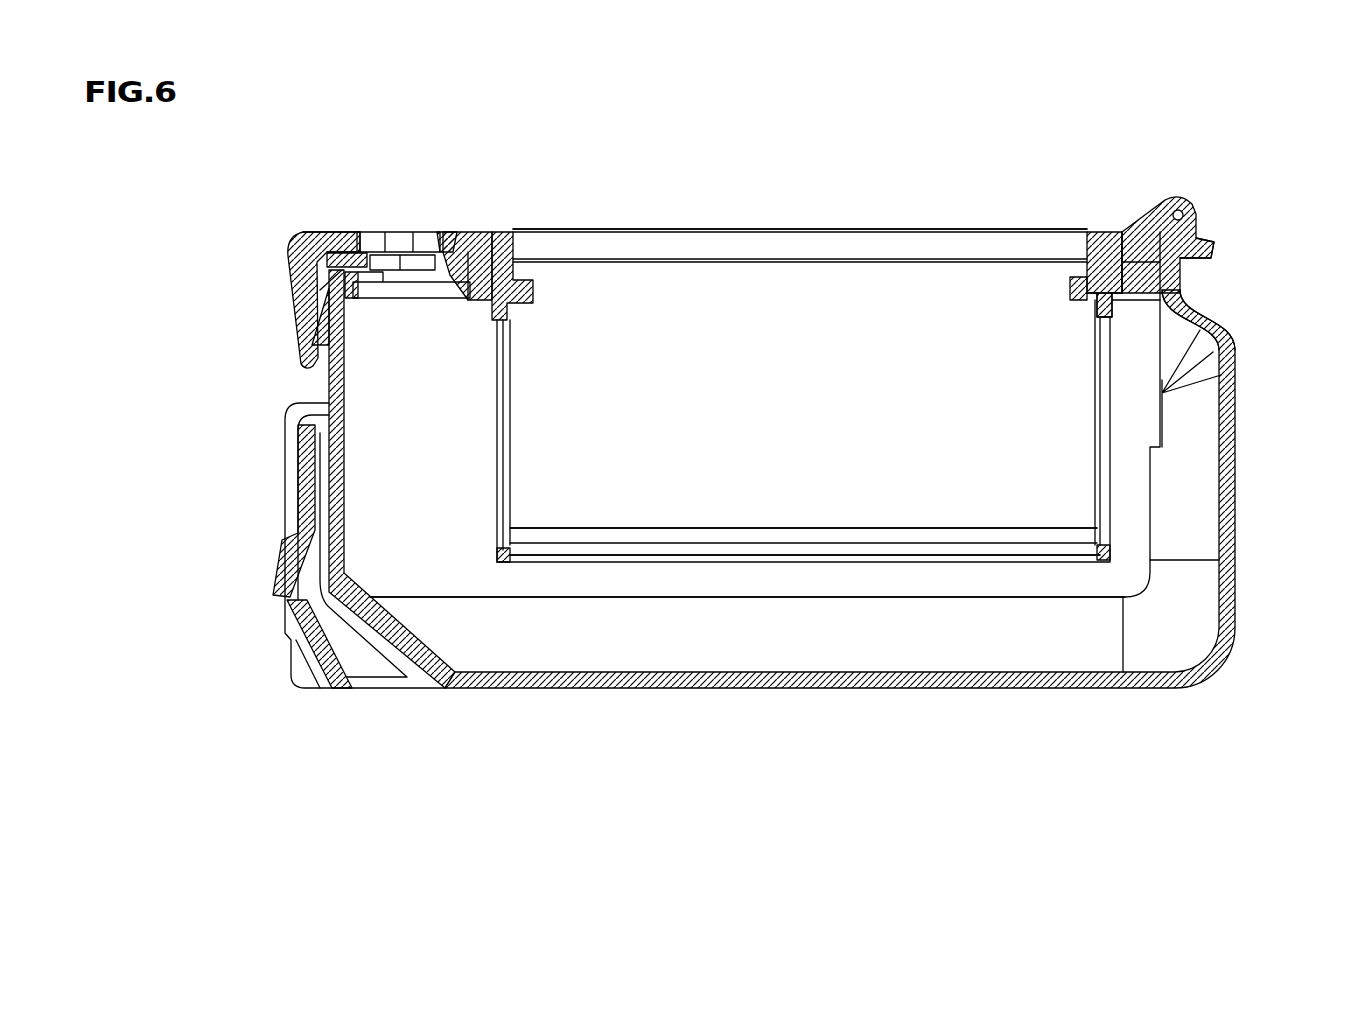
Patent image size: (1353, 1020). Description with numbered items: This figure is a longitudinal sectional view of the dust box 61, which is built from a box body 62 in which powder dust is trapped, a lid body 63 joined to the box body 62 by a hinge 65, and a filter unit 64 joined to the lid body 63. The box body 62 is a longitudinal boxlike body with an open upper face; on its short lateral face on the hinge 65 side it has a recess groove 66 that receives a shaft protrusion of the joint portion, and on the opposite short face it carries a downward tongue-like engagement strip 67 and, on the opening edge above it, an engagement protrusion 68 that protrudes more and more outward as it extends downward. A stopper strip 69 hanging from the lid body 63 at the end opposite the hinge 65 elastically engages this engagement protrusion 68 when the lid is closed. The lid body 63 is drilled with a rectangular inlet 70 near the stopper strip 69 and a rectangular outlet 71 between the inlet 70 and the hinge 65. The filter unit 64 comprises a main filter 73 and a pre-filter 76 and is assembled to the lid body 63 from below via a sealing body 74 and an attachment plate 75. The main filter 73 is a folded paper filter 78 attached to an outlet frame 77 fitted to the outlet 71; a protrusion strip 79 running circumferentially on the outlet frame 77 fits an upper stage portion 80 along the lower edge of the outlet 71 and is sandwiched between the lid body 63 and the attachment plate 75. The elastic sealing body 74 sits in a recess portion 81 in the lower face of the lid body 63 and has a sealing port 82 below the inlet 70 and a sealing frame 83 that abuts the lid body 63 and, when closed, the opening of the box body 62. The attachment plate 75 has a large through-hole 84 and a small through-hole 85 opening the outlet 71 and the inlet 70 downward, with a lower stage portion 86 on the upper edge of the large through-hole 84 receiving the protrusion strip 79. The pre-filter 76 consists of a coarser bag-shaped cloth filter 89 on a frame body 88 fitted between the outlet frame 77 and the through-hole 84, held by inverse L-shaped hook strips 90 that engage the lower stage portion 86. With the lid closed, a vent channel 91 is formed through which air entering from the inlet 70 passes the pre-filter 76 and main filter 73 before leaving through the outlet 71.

The dust box 61 is at (978, 157).
The box body 62 is at (1240, 520).
The lid body 63 is at (477, 240).
The filter unit 64 is at (880, 227).
The hinge 65 is at (1200, 205).
The recess groove 66 is at (1185, 305).
The engagement strip 67 is at (300, 535).
The engagement protrusion 68 is at (320, 338).
The stopper strip 69 is at (290, 300).
The inlet 70 is at (370, 233).
The outlet 71 is at (1108, 240).
The main filter 73 is at (795, 229).
The sealing body 74 is at (450, 240).
The attachment plate 75 is at (480, 302).
The pre-filter 76 is at (688, 565).
The outlet frame 77 is at (1105, 262).
The filter 78 is at (975, 505).
The protrusion strip 79 is at (1150, 232).
The upper stage portion 80 is at (1125, 250).
The recess portion 81 is at (330, 233).
The sealing port 82 is at (425, 258).
The sealing frame 83 is at (1215, 252).
The large through-hole 84 is at (1125, 298).
The small through-hole 85 is at (413, 290).
The lower stage portion 86 is at (1205, 325).
The frame body 88 is at (512, 318).
The filter 89 is at (608, 562).
The hook strips 90 is at (500, 232).
The vent channel 91 is at (465, 578).